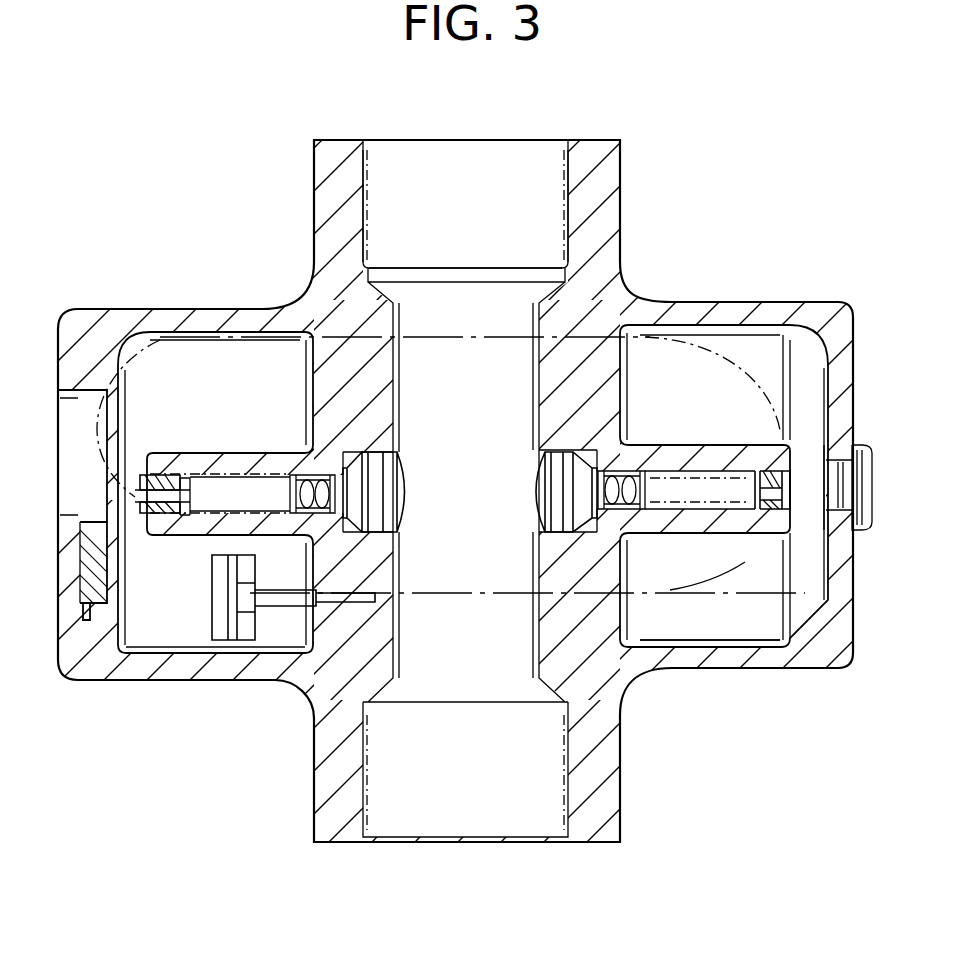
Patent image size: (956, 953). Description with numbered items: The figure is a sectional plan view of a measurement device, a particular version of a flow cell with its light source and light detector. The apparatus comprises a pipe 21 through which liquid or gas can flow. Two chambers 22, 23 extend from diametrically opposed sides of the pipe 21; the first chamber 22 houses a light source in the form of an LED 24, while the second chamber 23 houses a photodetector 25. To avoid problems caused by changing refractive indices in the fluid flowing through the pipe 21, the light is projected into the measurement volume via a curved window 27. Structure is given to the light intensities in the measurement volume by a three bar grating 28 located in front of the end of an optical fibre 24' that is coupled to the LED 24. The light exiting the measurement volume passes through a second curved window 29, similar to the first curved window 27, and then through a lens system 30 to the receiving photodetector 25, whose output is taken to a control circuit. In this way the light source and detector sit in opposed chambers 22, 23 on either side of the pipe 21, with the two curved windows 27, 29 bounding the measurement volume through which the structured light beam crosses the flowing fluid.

The pipe 21 is at (471, 196).
The chamber 22 is at (207, 490).
The chamber 23 is at (660, 483).
The LED 24 is at (293, 646).
The optical fibre 24' is at (710, 688).
The photodetector 25 is at (770, 515).
The curved window 27 is at (410, 494).
The three bar grating 28 is at (197, 522).
The curved window 29 is at (527, 490).
The lens system 30 is at (617, 512).